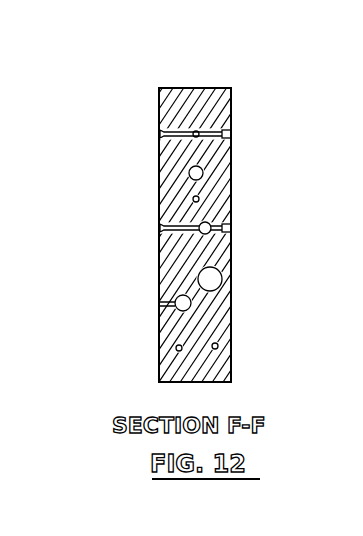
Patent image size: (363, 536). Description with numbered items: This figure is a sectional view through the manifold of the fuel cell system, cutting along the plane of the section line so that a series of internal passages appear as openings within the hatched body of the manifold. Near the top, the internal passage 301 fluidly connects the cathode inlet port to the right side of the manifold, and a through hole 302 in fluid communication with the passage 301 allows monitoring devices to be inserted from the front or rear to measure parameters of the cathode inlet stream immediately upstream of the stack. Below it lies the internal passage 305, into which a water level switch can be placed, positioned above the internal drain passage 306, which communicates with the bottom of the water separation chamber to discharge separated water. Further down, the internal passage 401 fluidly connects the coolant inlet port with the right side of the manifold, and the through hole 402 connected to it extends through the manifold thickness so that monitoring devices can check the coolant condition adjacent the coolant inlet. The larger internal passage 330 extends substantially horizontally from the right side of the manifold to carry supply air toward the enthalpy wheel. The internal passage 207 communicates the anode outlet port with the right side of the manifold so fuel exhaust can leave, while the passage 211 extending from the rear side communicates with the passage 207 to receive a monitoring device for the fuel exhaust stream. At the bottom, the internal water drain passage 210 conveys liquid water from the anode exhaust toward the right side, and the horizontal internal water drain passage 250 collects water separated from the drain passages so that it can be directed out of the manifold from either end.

The internal passage 301 is at (207, 131).
The through hole 302 is at (231, 134).
The internal passage 305 is at (203, 173).
The internal drain passage 306 is at (193, 200).
The internal passage 401 is at (231, 228).
The through hole 402 is at (162, 235).
The internal passage 330 is at (222, 279).
The internal passage 207 is at (191, 303).
The passage 211 is at (159, 305).
The internal water drain passage 210 is at (176, 349).
The internal water drain passage 250 is at (218, 346).